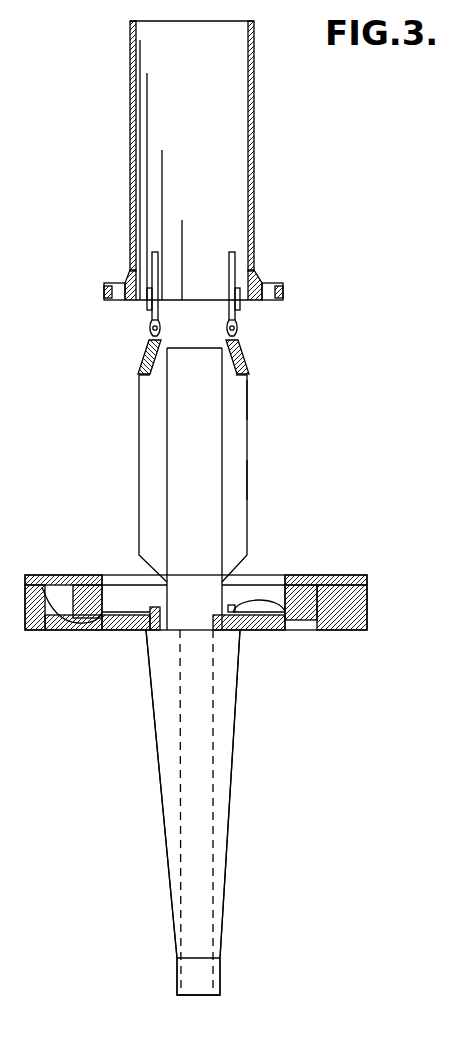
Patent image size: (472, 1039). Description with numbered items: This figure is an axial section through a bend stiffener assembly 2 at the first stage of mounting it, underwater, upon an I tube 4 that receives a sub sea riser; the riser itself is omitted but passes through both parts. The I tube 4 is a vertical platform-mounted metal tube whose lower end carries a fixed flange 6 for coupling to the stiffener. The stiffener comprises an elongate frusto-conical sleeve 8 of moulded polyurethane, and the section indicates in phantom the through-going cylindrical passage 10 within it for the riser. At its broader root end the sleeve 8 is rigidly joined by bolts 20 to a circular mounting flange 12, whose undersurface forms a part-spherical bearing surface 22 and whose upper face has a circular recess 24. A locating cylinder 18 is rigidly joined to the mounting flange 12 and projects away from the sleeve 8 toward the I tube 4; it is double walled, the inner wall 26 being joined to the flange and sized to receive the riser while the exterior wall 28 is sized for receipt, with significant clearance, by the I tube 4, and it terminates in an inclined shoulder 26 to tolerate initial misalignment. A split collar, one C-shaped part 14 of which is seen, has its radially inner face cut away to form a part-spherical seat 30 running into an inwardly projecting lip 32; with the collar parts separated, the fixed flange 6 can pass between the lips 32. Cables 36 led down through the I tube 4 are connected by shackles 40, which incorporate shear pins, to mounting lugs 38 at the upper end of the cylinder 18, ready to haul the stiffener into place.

The bend stiffener assembly 2 is at (258, 744).
The I tube 4 is at (257, 145).
The fixed flange 6 is at (283, 292).
The elongate sleeve 8 is at (232, 868).
The cylindrical passage 10 is at (215, 704).
The mounting flange 12 is at (118, 630).
The collar part 14 is at (48, 574).
The locating cylinder 18 is at (247, 428).
The bolts 20 is at (288, 614).
The part-spherical bearing surface 22 is at (78, 629).
The circular recess 24 is at (126, 578).
The inclined shoulder / inner wall 26 is at (242, 402).
The exterior wall 28 is at (249, 480).
The part-spherical seat 30 is at (335, 615).
The lip 32 is at (52, 630).
The cables 36 is at (233, 268).
The mounting lugs 38 is at (143, 366).
The shackles 40 is at (150, 333).